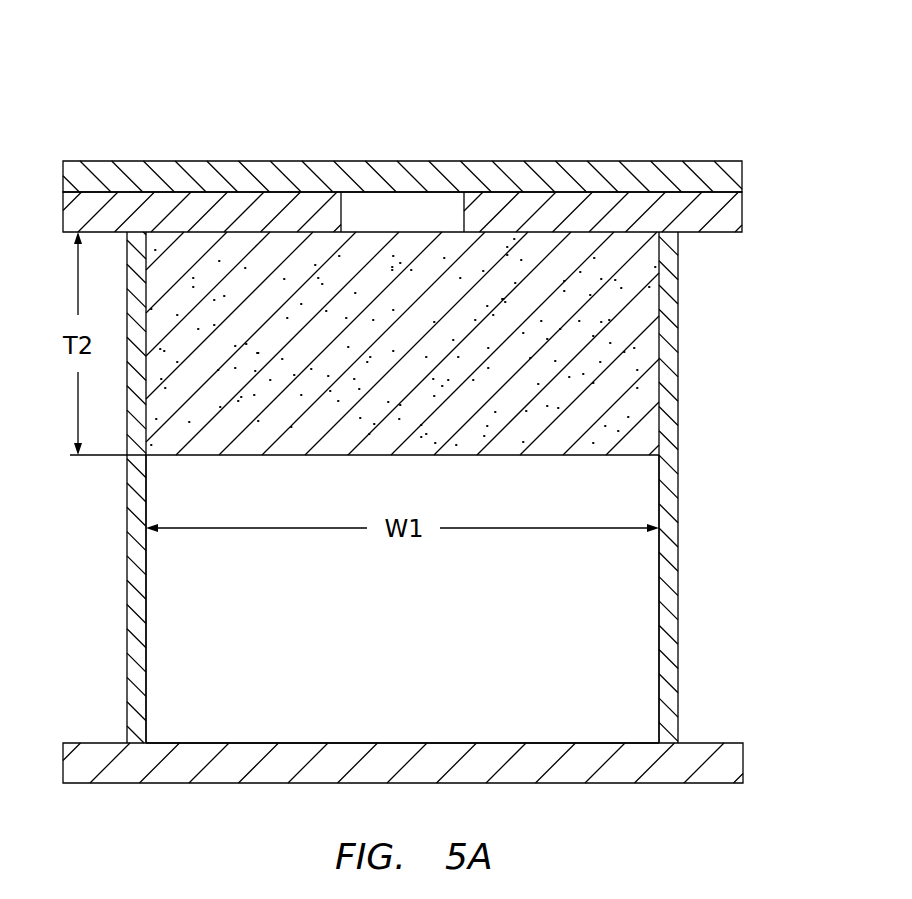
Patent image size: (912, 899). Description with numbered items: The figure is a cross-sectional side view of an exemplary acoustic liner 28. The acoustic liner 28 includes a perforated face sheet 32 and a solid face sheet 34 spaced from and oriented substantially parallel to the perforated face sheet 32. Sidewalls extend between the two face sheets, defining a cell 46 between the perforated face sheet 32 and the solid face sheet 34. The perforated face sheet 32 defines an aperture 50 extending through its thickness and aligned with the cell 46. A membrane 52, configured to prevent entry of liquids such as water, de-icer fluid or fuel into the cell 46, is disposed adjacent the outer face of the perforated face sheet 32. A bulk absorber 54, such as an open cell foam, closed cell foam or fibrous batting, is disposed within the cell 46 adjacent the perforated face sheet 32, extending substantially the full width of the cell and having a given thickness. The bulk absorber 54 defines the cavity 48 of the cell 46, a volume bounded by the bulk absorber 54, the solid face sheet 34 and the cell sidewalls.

The acoustic liner 28 is at (656, 105).
The perforated face sheet 32 is at (732, 212).
The solid face sheet 34 is at (732, 763).
The cell 46 is at (120, 503).
The cavity 48 is at (403, 659).
The aperture 50 is at (407, 222).
The membrane 52 is at (219, 161).
The bulk absorber 54 is at (370, 395).